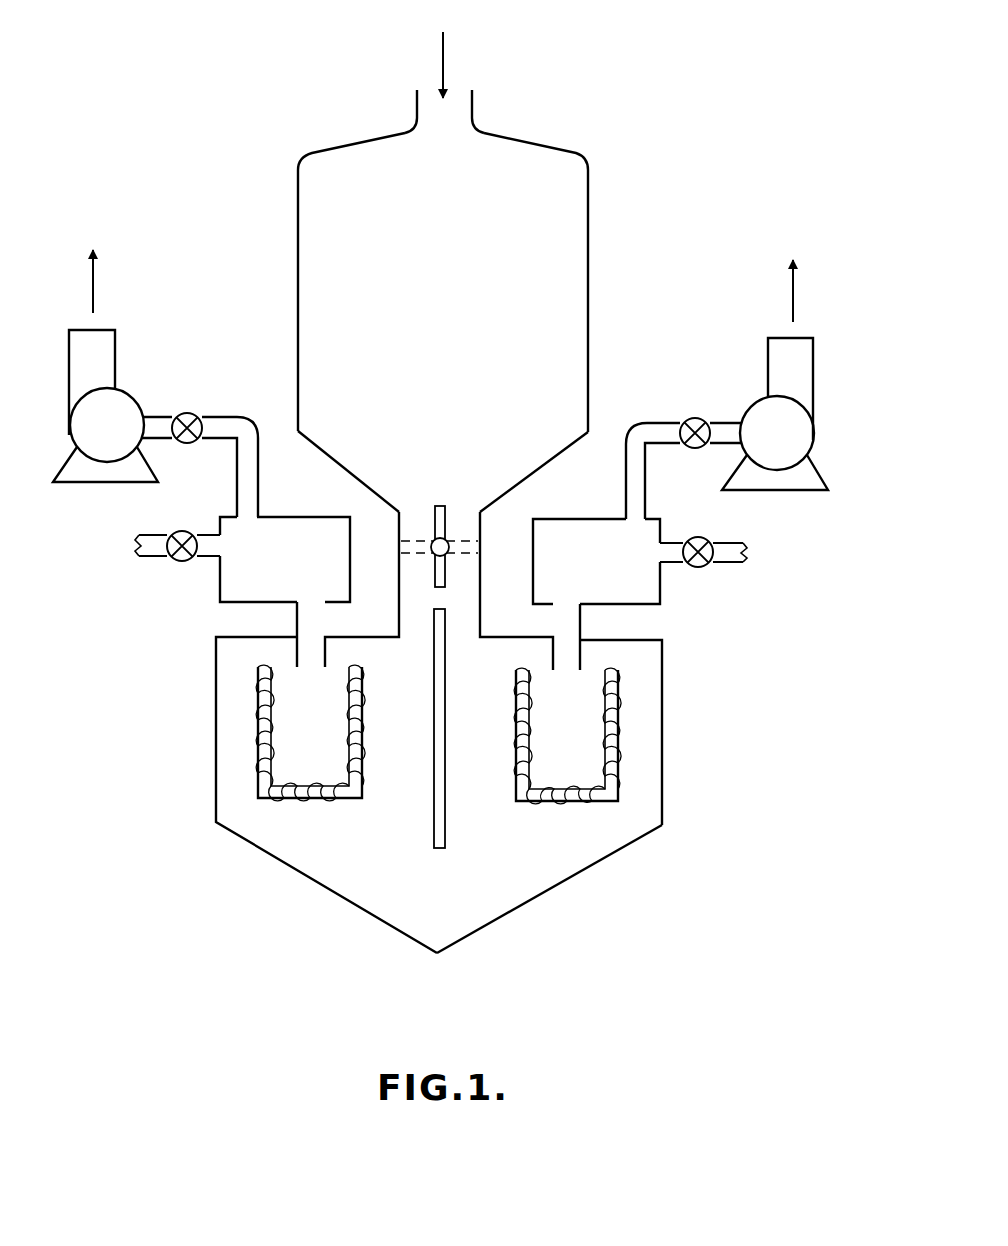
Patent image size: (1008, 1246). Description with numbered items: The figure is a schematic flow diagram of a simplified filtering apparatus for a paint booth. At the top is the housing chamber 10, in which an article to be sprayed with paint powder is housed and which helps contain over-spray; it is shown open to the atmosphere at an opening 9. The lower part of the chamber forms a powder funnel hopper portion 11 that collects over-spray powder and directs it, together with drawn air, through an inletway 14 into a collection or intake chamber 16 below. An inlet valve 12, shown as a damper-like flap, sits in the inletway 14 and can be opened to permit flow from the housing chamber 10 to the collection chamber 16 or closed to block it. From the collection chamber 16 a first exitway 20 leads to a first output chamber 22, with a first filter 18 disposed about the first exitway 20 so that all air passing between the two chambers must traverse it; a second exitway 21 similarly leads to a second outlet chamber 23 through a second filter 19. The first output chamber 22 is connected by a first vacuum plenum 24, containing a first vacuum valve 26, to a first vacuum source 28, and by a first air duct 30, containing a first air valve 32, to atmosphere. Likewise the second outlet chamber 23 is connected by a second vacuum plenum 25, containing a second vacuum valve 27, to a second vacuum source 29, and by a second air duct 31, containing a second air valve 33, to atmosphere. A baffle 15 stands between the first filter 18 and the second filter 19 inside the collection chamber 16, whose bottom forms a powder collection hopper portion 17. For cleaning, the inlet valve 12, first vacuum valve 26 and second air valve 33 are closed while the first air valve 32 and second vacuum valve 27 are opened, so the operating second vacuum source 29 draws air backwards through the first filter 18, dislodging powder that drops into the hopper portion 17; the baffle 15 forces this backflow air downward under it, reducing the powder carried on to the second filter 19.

The opening 9 is at (458, 95).
The housing chamber 10 is at (458, 293).
The powder funnel hopper portion 11 is at (535, 468).
The inlet valve 12 is at (437, 506).
The inletway 14 is at (463, 597).
The baffle 15 is at (440, 682).
The collection chamber 16 is at (398, 877).
The powder collection hopper portion 17 is at (560, 890).
The first filter 18 is at (362, 735).
The second filter 19 is at (512, 758).
The first exitway 20 is at (310, 607).
The second exitway 21 is at (572, 632).
The first output chamber 22 is at (308, 571).
The second outlet chamber 23 is at (605, 576).
The first vacuum plenum 24 is at (247, 500).
The second vacuum plenum 25 is at (637, 467).
The first vacuum valve 26 is at (198, 414).
The second vacuum valve 27 is at (694, 419).
The first vacuum source 28 is at (118, 403).
The second vacuum source 29 is at (805, 444).
The first air duct 30 is at (205, 556).
The second air duct 31 is at (673, 562).
The first air valve 32 is at (180, 562).
The second air valve 33 is at (706, 567).